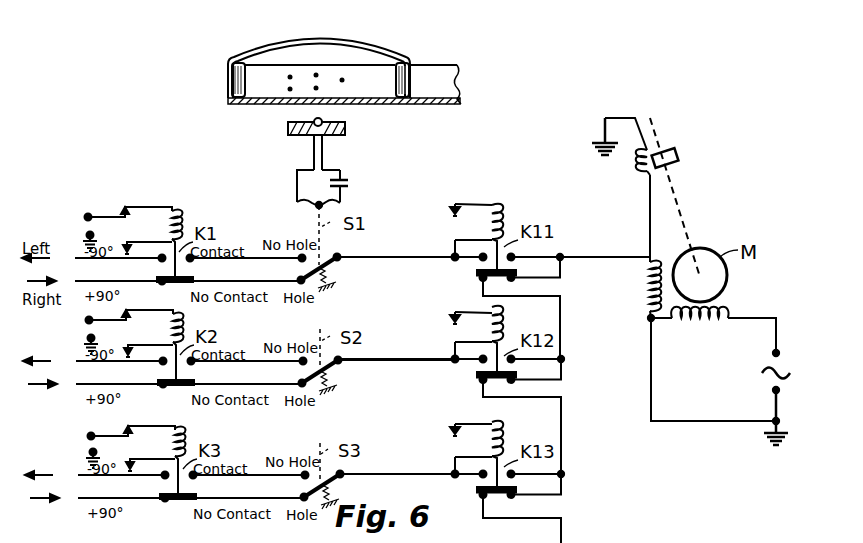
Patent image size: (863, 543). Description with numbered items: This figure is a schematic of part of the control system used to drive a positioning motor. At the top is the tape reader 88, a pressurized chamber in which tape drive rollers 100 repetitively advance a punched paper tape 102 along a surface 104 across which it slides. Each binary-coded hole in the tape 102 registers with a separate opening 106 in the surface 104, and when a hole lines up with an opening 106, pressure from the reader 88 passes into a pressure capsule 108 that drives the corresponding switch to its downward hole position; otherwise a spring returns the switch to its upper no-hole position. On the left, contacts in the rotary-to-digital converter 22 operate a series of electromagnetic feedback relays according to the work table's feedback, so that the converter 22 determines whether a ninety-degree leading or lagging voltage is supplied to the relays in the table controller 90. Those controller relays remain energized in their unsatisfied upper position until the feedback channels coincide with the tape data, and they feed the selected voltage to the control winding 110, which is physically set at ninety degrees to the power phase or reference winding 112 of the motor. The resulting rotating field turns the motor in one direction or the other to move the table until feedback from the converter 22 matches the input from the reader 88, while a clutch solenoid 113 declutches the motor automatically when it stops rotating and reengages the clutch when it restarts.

The rotary-to-digital converter 22 is at (103, 213).
The tape reader 88 is at (391, 51).
The table controller 90 is at (461, 204).
The tape drive rollers 100 is at (240, 83).
The punched paper tape 102 is at (464, 80).
The surface 104 is at (347, 128).
The opening 106 is at (309, 123).
The pressure capsule 108 is at (338, 172).
The control winding 110 is at (642, 290).
The power phase or reference winding 112 is at (721, 323).
The clutch solenoid 113 is at (641, 170).